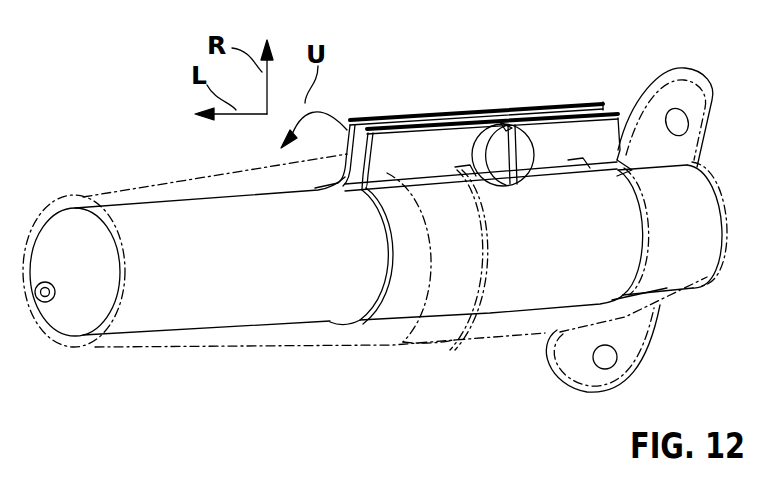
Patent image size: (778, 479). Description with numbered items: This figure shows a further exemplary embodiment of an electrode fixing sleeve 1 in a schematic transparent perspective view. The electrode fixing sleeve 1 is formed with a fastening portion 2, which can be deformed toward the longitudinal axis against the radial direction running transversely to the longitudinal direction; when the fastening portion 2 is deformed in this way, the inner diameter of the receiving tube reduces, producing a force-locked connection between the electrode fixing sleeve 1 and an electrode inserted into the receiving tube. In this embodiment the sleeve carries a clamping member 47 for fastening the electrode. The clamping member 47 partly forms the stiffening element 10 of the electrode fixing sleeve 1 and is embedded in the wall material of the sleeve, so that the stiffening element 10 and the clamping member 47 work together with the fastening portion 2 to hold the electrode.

The electrode fixing sleeve 1 is at (375, 236).
The fastening portion 2 is at (375, 258).
The stiffening element 10 is at (473, 356).
The clamping member 47 is at (416, 102).